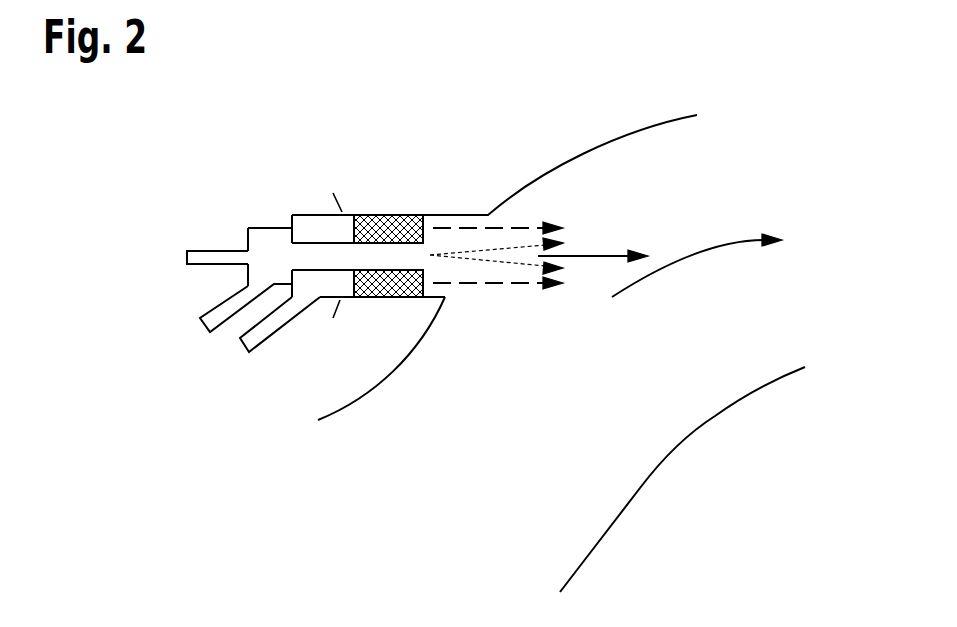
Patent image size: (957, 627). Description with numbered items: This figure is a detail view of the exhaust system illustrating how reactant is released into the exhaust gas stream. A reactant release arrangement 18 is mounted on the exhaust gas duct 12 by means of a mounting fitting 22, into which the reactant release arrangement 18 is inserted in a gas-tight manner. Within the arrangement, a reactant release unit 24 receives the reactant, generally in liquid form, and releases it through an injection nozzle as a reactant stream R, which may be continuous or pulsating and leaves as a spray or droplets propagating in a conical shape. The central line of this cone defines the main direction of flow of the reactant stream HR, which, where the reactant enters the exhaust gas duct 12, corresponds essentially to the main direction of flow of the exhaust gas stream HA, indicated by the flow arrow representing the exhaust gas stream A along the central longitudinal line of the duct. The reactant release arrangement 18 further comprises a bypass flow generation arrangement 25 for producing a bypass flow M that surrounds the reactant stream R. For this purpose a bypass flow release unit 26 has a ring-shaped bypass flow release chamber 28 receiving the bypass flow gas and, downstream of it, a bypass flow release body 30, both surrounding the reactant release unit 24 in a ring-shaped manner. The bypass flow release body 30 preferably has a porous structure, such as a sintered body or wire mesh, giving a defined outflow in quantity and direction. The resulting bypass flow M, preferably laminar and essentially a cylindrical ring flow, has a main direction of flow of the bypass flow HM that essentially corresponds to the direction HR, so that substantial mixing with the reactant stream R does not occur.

The exhaust gas duct 12 is at (685, 438).
The reactant release arrangement 18 is at (142, 304).
The mounting fitting 22 is at (380, 213).
The reactant release unit 24 is at (252, 227).
The bypass flow generation arrangement 25 is at (298, 170).
The bypass flow release unit 26 is at (303, 213).
The bypass flow release chamber 28 is at (307, 295).
The bypass flow release body 30 is at (375, 297).
The main direction of flow of the bypass flow HM is at (442, 227).
The bypass flow M is at (457, 225).
The reactant stream R is at (502, 250).
The main direction of flow of the reactant stream HR is at (613, 255).
The exhaust gas stream A is at (733, 238).
The main direction of flow of the exhaust gas stream HA is at (707, 250).